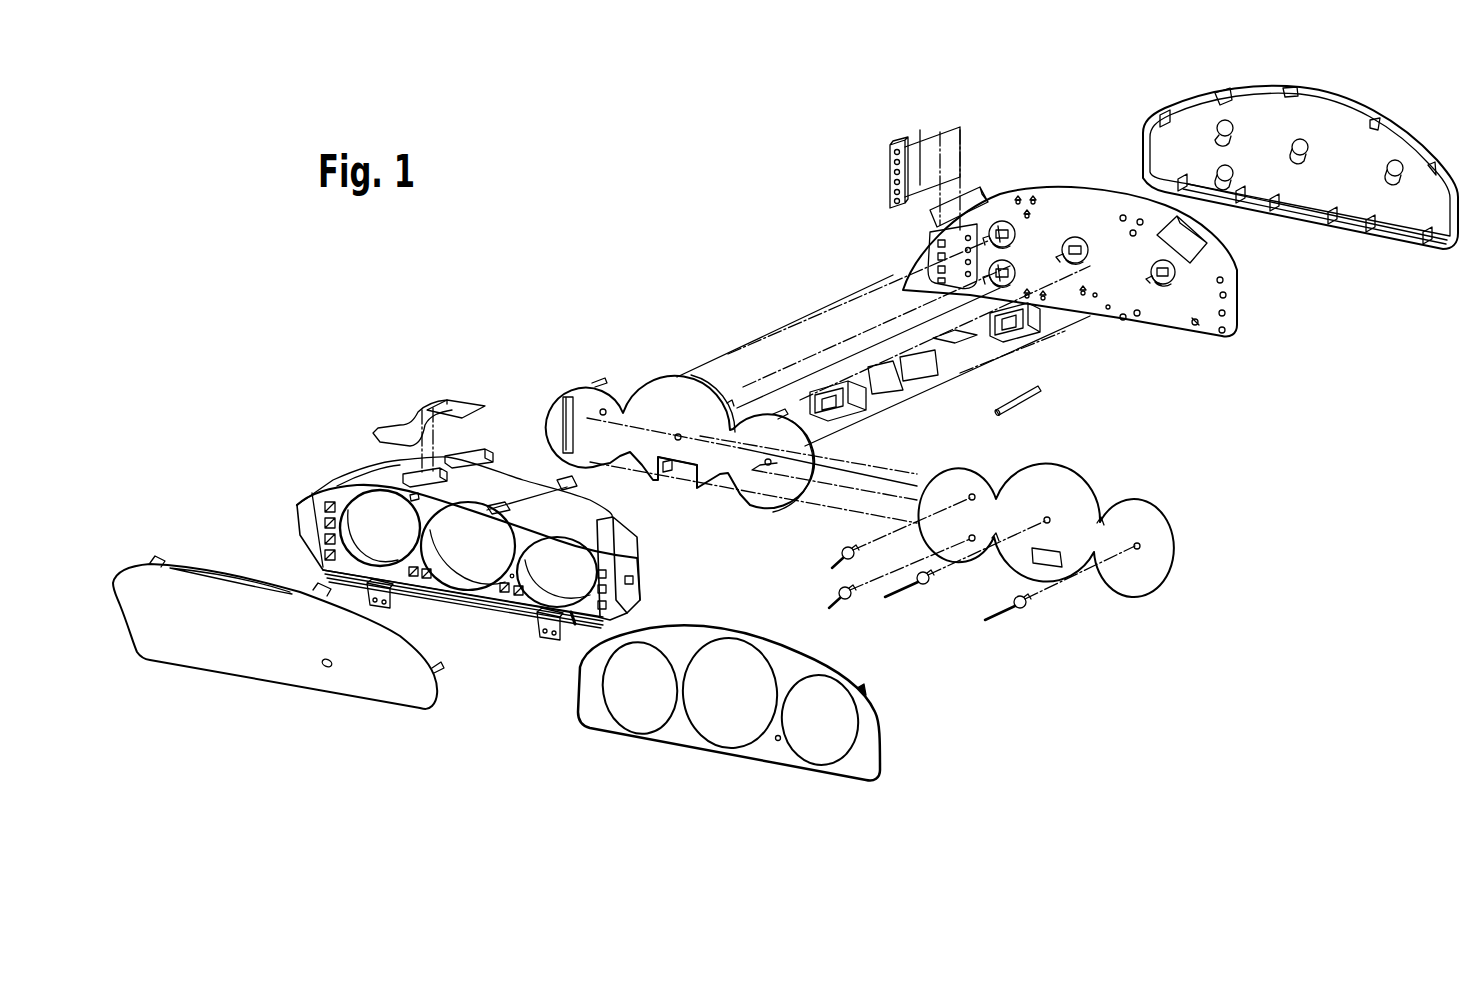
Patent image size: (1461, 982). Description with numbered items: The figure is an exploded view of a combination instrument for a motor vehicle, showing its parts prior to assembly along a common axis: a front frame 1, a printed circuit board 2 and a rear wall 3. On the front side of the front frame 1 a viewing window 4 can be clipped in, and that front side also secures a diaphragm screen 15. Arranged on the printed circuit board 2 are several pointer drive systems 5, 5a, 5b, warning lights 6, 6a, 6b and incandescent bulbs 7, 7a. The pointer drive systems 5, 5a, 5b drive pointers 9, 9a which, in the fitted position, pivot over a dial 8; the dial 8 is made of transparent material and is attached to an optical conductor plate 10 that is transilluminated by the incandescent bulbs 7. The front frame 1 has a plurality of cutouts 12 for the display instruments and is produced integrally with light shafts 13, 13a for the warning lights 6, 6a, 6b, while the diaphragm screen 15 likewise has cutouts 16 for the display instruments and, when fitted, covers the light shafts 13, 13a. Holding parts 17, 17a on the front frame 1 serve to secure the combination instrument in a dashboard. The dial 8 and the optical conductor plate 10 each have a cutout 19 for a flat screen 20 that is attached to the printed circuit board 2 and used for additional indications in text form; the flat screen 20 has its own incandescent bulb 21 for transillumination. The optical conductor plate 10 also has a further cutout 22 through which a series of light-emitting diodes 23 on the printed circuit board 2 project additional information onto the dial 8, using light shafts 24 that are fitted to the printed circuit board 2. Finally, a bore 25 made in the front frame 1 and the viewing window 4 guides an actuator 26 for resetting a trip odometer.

The front frame 1 is at (367, 480).
The printed circuit board 2 is at (1050, 197).
The rear wall 3 is at (1383, 147).
The viewing window 4 is at (265, 645).
The pointer drive system 5 is at (1178, 273).
The pointer drive system 5a is at (1077, 237).
The pointer drive system 5b is at (992, 296).
The warning light 6 is at (1122, 215).
The warning light 6a is at (1230, 296).
The warning light 6b is at (1138, 316).
The incandescent bulb 7 is at (1197, 325).
The incandescent bulb 7a is at (987, 288).
The dial 8 is at (1160, 557).
The pointer 9 is at (1020, 608).
The pointer 9a is at (927, 582).
The optical conductor plate 10 is at (587, 400).
The cutout 12 is at (573, 622).
The light shaft 13 is at (597, 556).
The light shaft 13a is at (350, 527).
The diaphragm screen 15 is at (867, 747).
The cutout 16 is at (864, 689).
The holding part 17 is at (535, 625).
The holding part 17a is at (447, 403).
The cutout 19 is at (1050, 567).
The flat screen 20 is at (878, 373).
The incandescent bulb 21 is at (1108, 310).
The cutout 22 is at (565, 383).
The light-emitting diodes 23 is at (965, 255).
The light shafts 24 is at (897, 142).
The bore 25 is at (324, 668).
The actuator 26 is at (1033, 396).